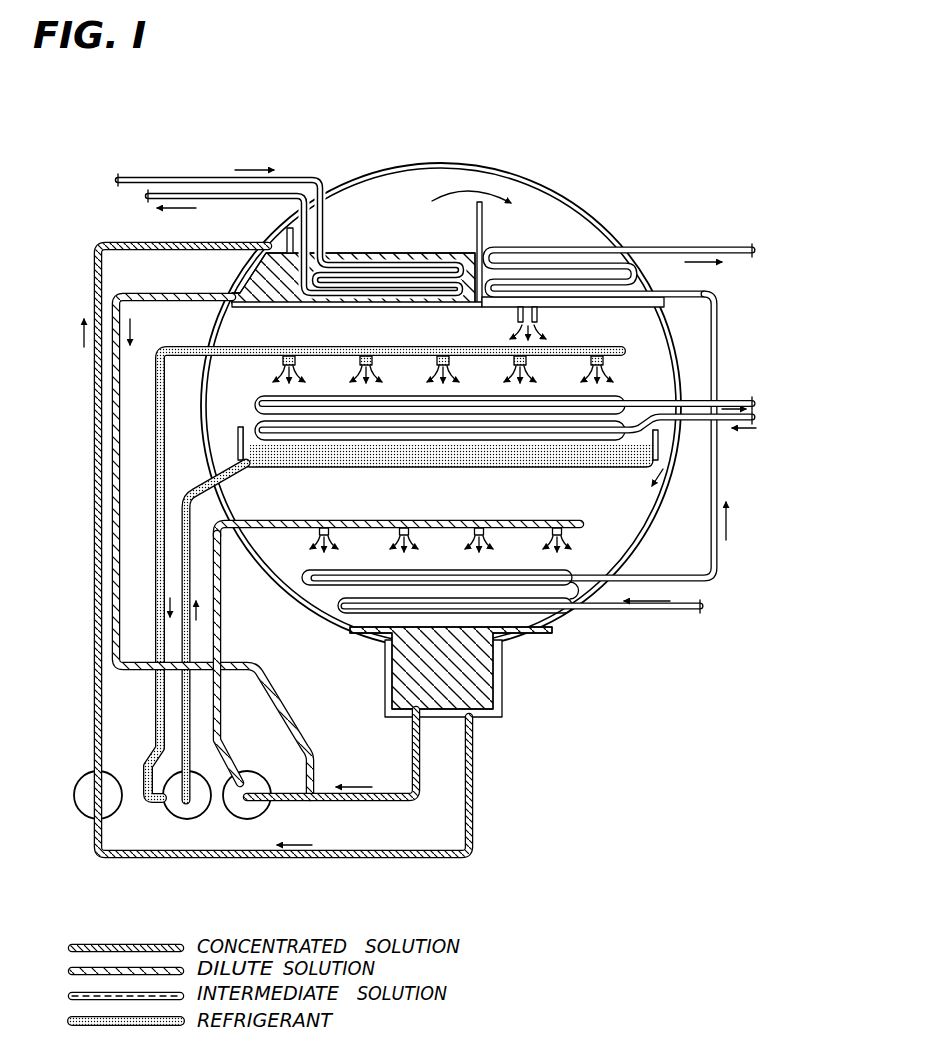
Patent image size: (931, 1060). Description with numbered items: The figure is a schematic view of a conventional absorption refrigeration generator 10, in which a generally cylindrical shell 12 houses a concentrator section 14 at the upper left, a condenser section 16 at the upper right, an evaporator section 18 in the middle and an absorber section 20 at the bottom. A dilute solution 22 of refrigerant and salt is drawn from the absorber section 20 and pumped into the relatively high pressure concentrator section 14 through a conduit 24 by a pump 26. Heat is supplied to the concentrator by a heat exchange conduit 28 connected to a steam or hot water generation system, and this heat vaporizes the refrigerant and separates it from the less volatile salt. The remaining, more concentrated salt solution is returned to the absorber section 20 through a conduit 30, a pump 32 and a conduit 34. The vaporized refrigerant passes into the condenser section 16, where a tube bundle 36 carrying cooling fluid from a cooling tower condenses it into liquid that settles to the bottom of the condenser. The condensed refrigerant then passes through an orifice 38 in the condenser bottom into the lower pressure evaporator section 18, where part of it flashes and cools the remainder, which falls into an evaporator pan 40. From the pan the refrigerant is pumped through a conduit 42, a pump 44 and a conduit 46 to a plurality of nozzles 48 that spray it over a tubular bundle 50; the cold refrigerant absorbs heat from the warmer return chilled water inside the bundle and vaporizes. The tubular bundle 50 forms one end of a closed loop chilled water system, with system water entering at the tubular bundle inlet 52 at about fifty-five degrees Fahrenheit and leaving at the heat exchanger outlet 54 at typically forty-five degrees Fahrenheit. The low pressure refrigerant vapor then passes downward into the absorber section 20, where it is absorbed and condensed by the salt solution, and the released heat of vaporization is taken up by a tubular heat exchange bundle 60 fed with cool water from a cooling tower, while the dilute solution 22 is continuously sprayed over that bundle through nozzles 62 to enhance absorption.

The absorption refrigeration generator 10 is at (562, 618).
The shell 12 is at (596, 204).
The concentrator section 14 is at (392, 236).
The condenser section 16 is at (554, 236).
The evaporator section 18 is at (392, 344).
The absorber section 20 is at (414, 508).
The dilute solution 22 is at (262, 260).
The conduit 24 is at (138, 242).
The pump 26 is at (74, 791).
The heat exchange conduit 28 is at (136, 178).
The conduit 30 is at (218, 308).
The pump 32 is at (242, 818).
The conduit 34 is at (222, 648).
The tube bundle 36 is at (626, 242).
The orifice 38 is at (540, 318).
The evaporator pan 40 is at (546, 472).
The conduit 42 is at (194, 496).
The pump 44 is at (174, 806).
The conduit 46 is at (184, 356).
The nozzles 48 is at (618, 376).
The tubular bundle 50 is at (256, 406).
The tubular bundle inlet 52 is at (697, 440).
The heat exchanger outlet 54 is at (700, 392).
The tubular heat exchange bundle 60 is at (576, 532).
The nozzles 62 is at (440, 544).